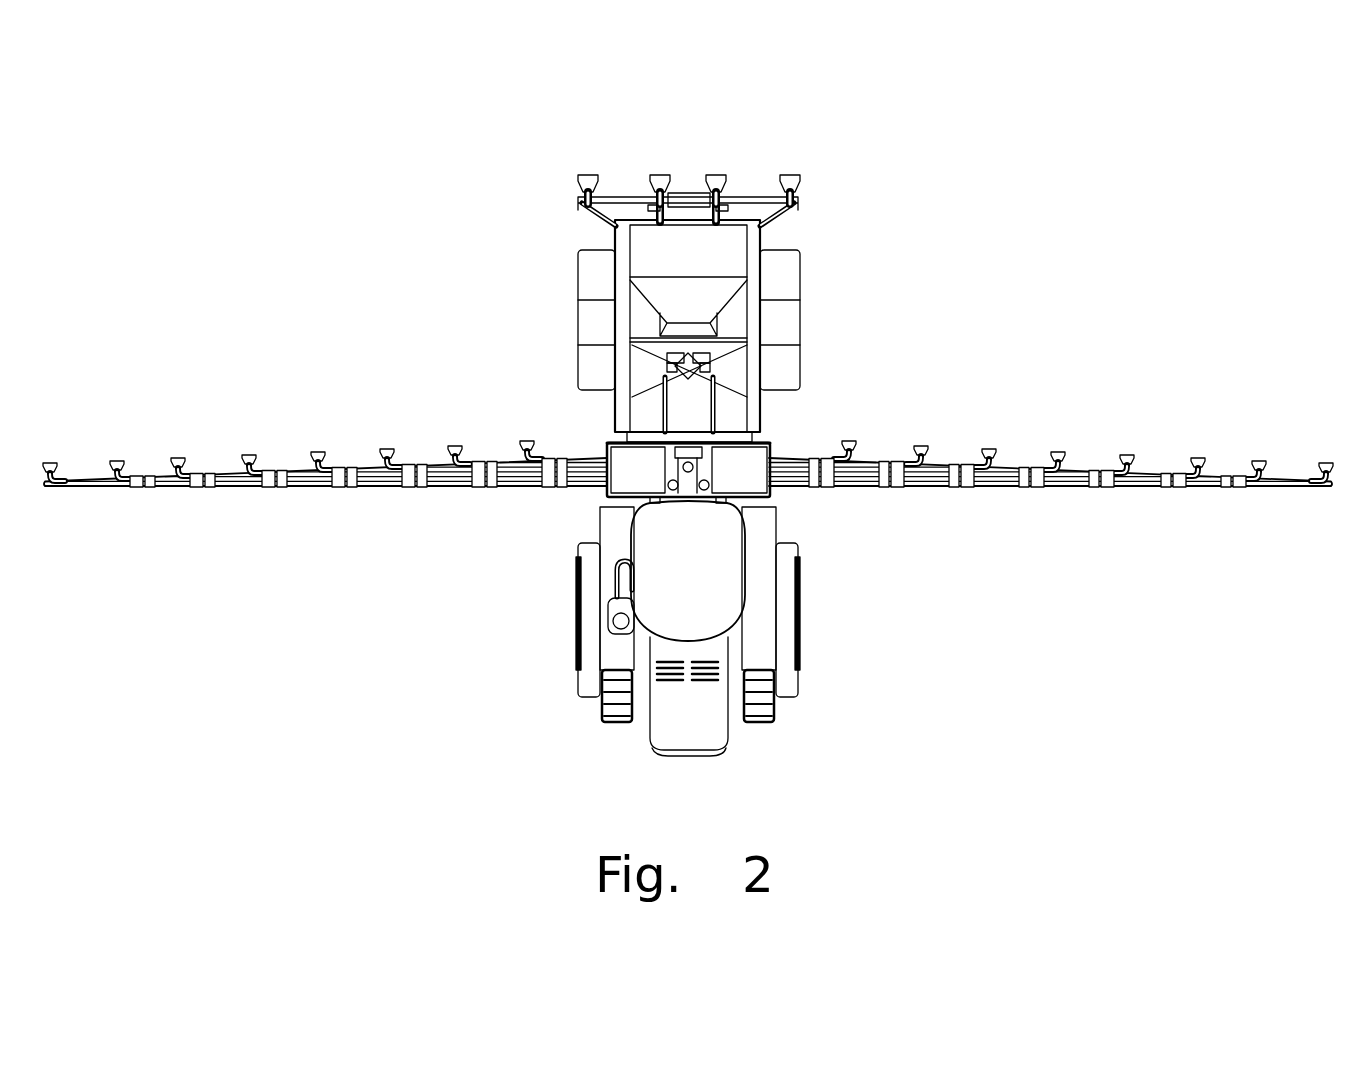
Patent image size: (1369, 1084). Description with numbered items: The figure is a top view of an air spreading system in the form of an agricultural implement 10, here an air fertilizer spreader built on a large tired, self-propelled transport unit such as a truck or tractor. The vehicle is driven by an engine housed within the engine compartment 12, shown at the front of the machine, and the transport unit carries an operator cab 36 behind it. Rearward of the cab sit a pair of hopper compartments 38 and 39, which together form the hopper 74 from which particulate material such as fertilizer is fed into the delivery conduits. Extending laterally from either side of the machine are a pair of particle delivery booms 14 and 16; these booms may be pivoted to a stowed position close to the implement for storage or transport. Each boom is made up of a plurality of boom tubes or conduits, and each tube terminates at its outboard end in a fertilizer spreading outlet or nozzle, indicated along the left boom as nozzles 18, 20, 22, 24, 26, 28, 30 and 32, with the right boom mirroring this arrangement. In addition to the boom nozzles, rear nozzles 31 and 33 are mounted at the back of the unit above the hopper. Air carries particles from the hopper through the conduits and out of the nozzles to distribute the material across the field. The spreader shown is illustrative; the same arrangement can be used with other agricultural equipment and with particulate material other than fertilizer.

The agricultural implement 10 is at (848, 703).
The engine compartment 12 is at (678, 717).
The particle delivery boom 14 is at (325, 486).
The particle delivery boom 16 is at (1005, 507).
The fertilizer spreading nozzle 18 is at (527, 441).
The fertilizer spreading nozzle 20 is at (455, 446).
The fertilizer spreading nozzle 22 is at (387, 449).
The fertilizer spreading nozzle 24 is at (318, 452).
The fertilizer spreading nozzle 26 is at (249, 455).
The fertilizer spreading nozzle 28 is at (178, 458).
The fertilizer spreading nozzle 30 is at (117, 461).
The fertilizer spreading nozzle 32 is at (50, 463).
The rear nozzle 31 is at (586, 175).
The rear nozzle 33 is at (660, 175).
The operator cab 36 is at (712, 567).
The hopper compartment 38 is at (657, 368).
The hopper compartment 39 is at (677, 305).
The hopper 74 is at (758, 273).